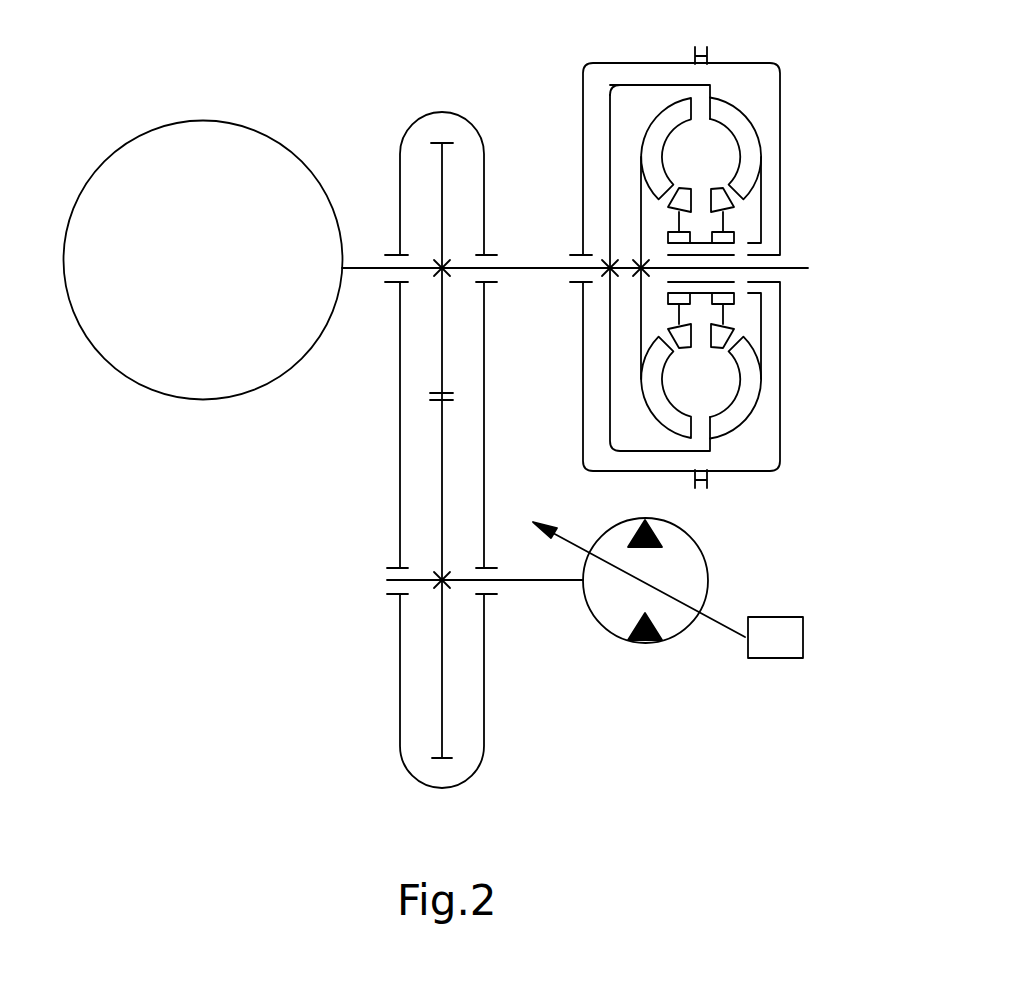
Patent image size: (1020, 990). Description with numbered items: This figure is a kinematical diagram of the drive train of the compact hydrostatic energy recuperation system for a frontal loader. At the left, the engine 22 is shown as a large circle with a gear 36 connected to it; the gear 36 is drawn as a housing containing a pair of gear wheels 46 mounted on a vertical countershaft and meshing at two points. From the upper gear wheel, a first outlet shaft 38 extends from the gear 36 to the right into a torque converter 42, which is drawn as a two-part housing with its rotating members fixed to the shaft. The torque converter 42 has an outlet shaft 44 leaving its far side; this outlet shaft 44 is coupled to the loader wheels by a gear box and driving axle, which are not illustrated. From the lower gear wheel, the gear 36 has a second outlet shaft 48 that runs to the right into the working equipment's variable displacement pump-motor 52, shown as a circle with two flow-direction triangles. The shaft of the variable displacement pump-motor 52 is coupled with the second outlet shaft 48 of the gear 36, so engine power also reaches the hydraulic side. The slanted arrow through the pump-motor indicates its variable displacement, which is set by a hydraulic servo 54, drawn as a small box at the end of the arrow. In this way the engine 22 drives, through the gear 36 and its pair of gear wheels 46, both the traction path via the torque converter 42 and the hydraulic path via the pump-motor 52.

The engine 22 is at (168, 123).
The gear 36 is at (420, 117).
The first outlet shaft 38 is at (533, 267).
The torque converter 42 is at (582, 79).
The outlet shaft 44 is at (798, 268).
The pair of gear wheels 46 is at (440, 360).
The second outlet shaft 48 is at (542, 582).
The variable displacement pump-motor 52 is at (709, 580).
The hydraulic servo 54 is at (785, 658).